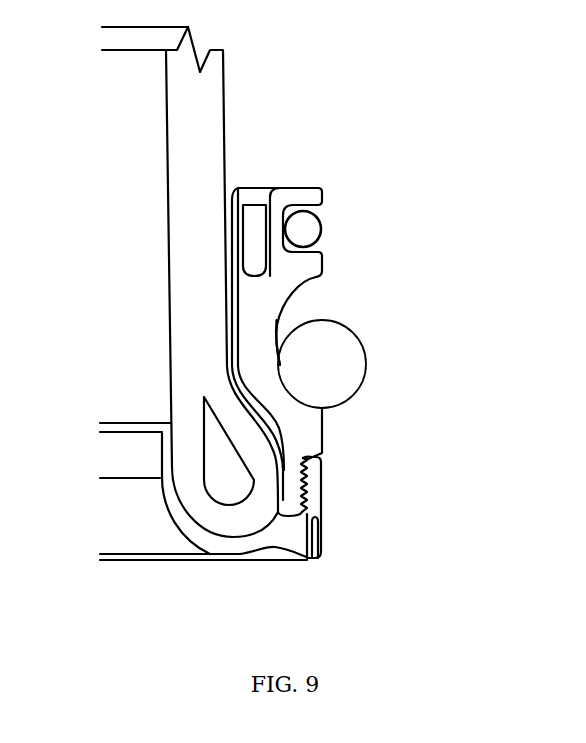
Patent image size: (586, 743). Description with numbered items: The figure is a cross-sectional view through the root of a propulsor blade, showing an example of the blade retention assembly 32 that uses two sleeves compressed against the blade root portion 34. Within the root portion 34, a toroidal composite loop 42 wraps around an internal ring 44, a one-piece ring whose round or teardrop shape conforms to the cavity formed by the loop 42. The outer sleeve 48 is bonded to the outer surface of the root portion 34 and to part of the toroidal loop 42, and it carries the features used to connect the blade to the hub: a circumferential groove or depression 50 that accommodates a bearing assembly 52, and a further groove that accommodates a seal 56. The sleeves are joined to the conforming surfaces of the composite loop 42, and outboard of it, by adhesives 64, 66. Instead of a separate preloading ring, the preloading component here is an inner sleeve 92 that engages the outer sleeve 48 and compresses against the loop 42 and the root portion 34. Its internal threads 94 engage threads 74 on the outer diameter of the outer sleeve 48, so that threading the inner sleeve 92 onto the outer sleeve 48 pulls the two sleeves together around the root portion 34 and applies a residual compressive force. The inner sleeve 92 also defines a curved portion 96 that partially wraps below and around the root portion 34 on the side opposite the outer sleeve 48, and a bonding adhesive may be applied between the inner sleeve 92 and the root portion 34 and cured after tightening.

The blade retention assembly 32 is at (404, 445).
The root portion 34 is at (190, 268).
The toroidal composite loop 42 is at (213, 540).
The internal ring 44 is at (214, 446).
The outer sleeve 48 is at (258, 305).
The circumferential groove or depression 50 is at (277, 341).
The bearing assembly 52 is at (355, 373).
The seal 56 is at (318, 229).
The adhesive 64 is at (166, 424).
The adhesive 66 is at (231, 184).
The threads 74 is at (300, 458).
The inner sleeve 92 is at (277, 538).
The internal threads 94 is at (306, 491).
The curved portion 96 is at (168, 509).